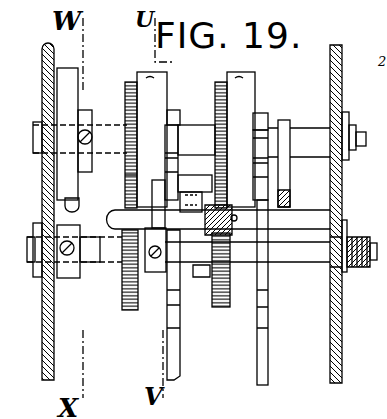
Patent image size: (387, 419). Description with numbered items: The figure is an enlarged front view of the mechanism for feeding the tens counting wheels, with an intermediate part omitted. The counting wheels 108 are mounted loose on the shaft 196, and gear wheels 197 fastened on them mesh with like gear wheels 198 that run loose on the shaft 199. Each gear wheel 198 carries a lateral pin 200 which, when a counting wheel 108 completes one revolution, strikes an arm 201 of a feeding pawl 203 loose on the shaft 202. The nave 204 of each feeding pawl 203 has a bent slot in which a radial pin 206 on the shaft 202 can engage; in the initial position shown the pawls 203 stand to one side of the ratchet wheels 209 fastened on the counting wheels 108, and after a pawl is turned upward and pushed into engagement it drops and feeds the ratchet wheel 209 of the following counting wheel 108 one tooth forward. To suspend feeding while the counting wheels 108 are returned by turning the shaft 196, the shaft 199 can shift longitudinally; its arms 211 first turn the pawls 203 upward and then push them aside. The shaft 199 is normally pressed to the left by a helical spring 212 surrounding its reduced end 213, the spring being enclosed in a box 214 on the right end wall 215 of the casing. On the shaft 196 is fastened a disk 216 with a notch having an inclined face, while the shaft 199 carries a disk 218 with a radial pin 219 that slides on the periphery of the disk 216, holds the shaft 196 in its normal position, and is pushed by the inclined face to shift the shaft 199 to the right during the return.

The counting wheel 108 is at (164, 84).
The shaft 196 is at (97, 128).
The gear wheel 197 is at (130, 83).
The gear wheel 198 is at (124, 308).
The shaft 199 is at (98, 248).
The lateral pin 200 is at (206, 280).
The arm 201 is at (186, 292).
The shaft 202 is at (298, 217).
The feeding pawl 203 is at (188, 187).
The nave 204 is at (304, 264).
The radial pin 206 is at (126, 180).
The ratchet wheel 209 is at (174, 116).
The arm 211 is at (152, 274).
The helical spring 212 is at (359, 290).
The reduced end 213 is at (373, 262).
The box 214 is at (366, 235).
The right end wall 215 is at (332, 78).
The disk 216 is at (72, 76).
The disk 218 is at (66, 280).
The radial pin 219 is at (74, 208).